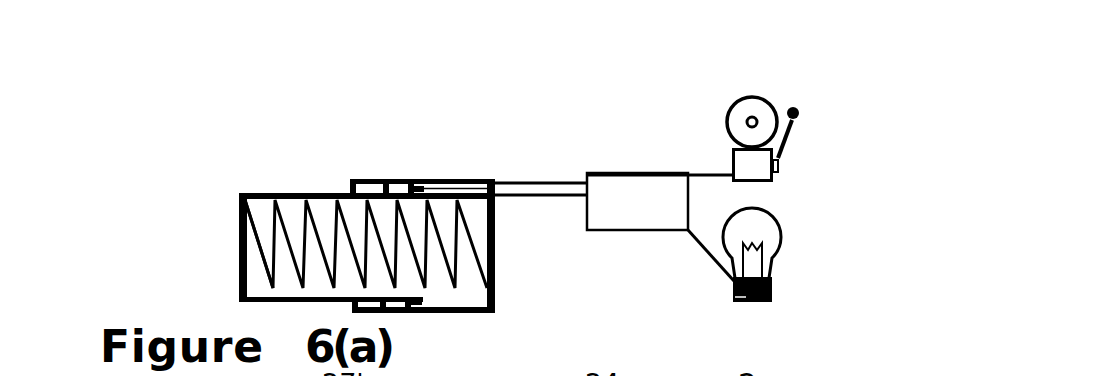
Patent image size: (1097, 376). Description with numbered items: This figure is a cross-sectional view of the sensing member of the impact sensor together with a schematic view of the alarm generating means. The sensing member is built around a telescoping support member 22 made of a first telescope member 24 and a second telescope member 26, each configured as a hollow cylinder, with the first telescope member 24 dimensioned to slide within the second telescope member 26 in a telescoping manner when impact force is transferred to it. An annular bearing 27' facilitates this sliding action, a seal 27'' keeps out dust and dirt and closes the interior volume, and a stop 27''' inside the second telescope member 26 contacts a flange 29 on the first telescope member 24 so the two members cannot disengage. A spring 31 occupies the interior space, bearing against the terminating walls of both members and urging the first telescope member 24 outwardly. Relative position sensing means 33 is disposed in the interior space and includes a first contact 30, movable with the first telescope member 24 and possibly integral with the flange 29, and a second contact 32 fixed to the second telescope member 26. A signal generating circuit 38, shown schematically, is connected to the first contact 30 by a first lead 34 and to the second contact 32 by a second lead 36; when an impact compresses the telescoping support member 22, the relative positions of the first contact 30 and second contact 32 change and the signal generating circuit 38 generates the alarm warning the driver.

The telescoping support member 22 is at (468, 210).
The first telescope member 24 is at (246, 214).
The second telescope member 26 is at (497, 288).
The annular bearing 27' is at (408, 138).
The seal 27'' is at (404, 151).
The stop 27''' is at (437, 127).
The flange 29 is at (432, 313).
The first contact 30 is at (433, 177).
The spring 31 is at (268, 260).
The second contact 32 is at (430, 175).
The relative position sensing means 33 is at (425, 173).
The first lead 34 is at (545, 183).
The second lead 36 is at (568, 195).
The signal generating circuit 38 is at (643, 222).